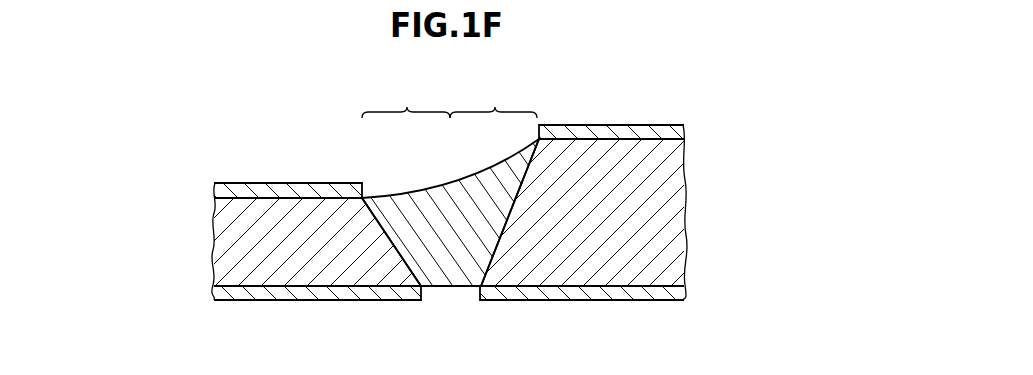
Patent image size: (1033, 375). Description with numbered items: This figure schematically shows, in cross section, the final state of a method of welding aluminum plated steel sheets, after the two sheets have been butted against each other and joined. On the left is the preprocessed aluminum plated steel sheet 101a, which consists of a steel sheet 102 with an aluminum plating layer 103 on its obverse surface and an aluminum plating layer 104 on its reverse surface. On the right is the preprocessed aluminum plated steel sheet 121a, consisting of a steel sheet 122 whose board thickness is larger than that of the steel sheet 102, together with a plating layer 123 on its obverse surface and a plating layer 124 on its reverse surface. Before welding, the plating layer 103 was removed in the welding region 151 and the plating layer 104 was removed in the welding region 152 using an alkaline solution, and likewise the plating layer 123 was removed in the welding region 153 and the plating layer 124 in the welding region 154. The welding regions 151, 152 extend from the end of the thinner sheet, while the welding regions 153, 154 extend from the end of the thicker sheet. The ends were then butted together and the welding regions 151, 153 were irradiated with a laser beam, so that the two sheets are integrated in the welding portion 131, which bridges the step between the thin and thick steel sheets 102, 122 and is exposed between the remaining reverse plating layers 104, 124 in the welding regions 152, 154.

The preprocessed aluminum plated steel sheet 101a is at (272, 242).
The steel sheet 102 is at (214, 243).
The plating layer 103 is at (214, 189).
The plating layer 104 is at (291, 292).
The preprocessed aluminum plated steel sheet 121a is at (610, 214).
The steel sheet 122 is at (685, 216).
The plating layer 123 is at (685, 133).
The plating layer 124 is at (685, 295).
The welding portion 131 is at (442, 182).
The welding region 151 is at (406, 95).
The welding region 152 is at (436, 293).
The welding region 153 is at (493, 95).
The welding region 154 is at (460, 293).